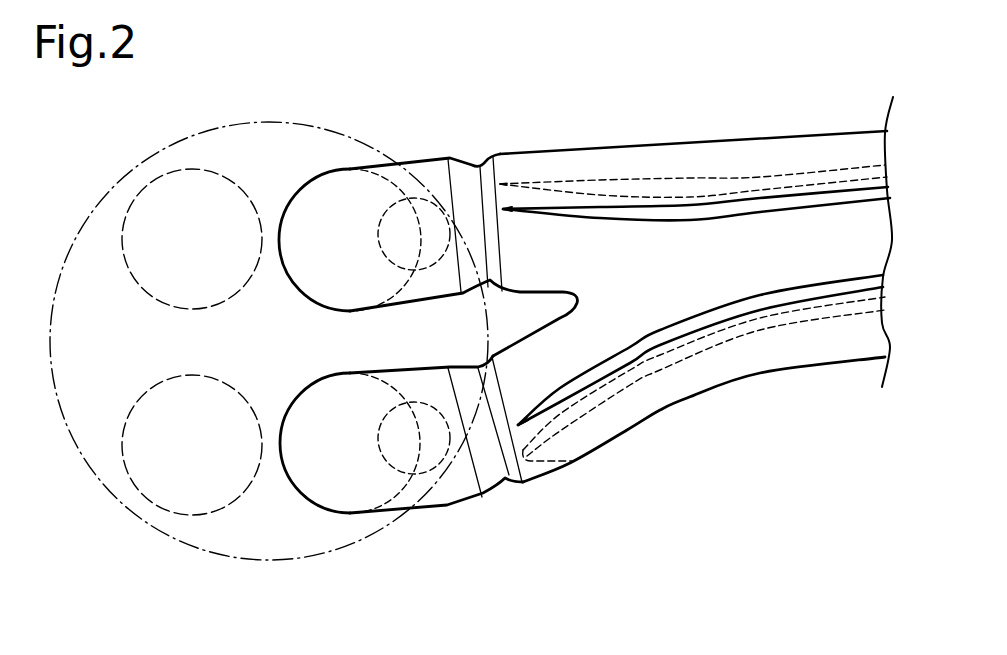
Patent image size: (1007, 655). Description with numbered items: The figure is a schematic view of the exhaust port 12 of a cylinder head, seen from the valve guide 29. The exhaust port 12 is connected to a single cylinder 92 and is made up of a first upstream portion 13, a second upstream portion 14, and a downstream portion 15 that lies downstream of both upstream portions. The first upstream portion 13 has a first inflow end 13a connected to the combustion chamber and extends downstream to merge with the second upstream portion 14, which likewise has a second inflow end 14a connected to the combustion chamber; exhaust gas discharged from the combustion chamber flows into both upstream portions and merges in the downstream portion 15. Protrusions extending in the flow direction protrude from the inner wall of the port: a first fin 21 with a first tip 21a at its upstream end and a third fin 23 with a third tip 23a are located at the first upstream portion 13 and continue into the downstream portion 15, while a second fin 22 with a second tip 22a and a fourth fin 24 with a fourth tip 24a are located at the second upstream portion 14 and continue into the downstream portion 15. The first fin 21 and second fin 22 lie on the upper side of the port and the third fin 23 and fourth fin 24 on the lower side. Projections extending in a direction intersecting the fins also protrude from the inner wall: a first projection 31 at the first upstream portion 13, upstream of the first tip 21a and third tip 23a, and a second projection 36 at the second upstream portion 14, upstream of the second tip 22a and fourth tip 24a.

The exhaust port 12 is at (696, 230).
The first upstream portion 13 is at (417, 246).
The first inflow end 13a is at (290, 200).
The second upstream portion 14 is at (390, 443).
The second inflow end 14a is at (294, 492).
The downstream portion 15 is at (698, 396).
The first fin 21 is at (665, 219).
The first tip 21a is at (507, 215).
The second fin 22 is at (620, 350).
The second tip 22a is at (516, 424).
The third fin 23 is at (654, 184).
The third tip 23a is at (504, 180).
The fourth fin 24 is at (633, 386).
The fourth tip 24a is at (573, 461).
The valve guide 29 is at (421, 270).
The first projection 31 is at (494, 166).
The second projection 36 is at (527, 478).
The cylinder 92 is at (214, 560).